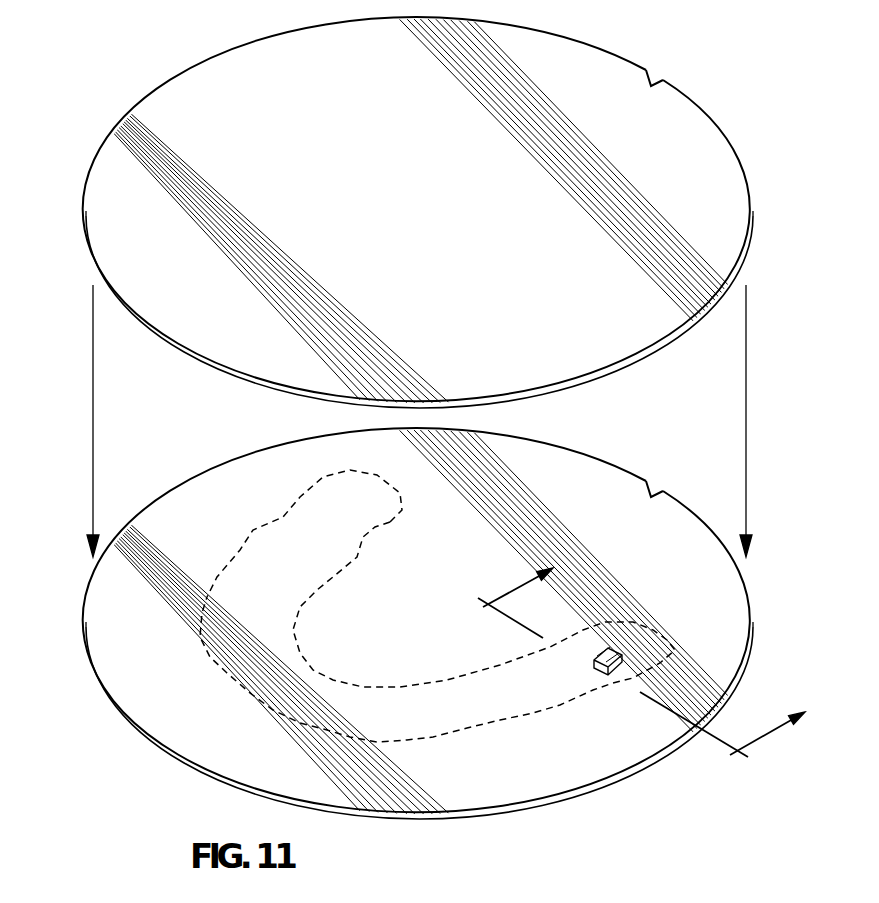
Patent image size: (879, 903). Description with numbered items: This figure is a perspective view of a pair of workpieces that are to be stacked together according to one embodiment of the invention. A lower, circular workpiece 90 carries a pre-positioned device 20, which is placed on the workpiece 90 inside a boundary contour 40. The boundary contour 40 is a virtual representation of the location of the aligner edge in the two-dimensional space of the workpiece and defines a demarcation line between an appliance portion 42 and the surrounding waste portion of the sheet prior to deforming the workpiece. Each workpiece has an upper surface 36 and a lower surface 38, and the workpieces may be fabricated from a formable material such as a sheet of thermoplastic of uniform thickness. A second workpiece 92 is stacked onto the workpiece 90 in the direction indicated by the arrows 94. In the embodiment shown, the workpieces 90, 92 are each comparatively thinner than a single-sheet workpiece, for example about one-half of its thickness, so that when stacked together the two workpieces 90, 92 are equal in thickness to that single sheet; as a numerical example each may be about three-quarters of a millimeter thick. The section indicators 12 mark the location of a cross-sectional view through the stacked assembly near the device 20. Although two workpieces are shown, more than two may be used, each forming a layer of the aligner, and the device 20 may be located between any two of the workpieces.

The section line of chip package 12 is at (625, 679).
The device 20 is at (620, 652).
The upper surface 36 is at (587, 71).
The lower surface 38 is at (500, 815).
The boundary contour 40 is at (389, 519).
The appliance portion 42 is at (455, 722).
The workpiece 90 is at (598, 484).
The workpiece 92 is at (688, 155).
The arrows 94 is at (93, 428).